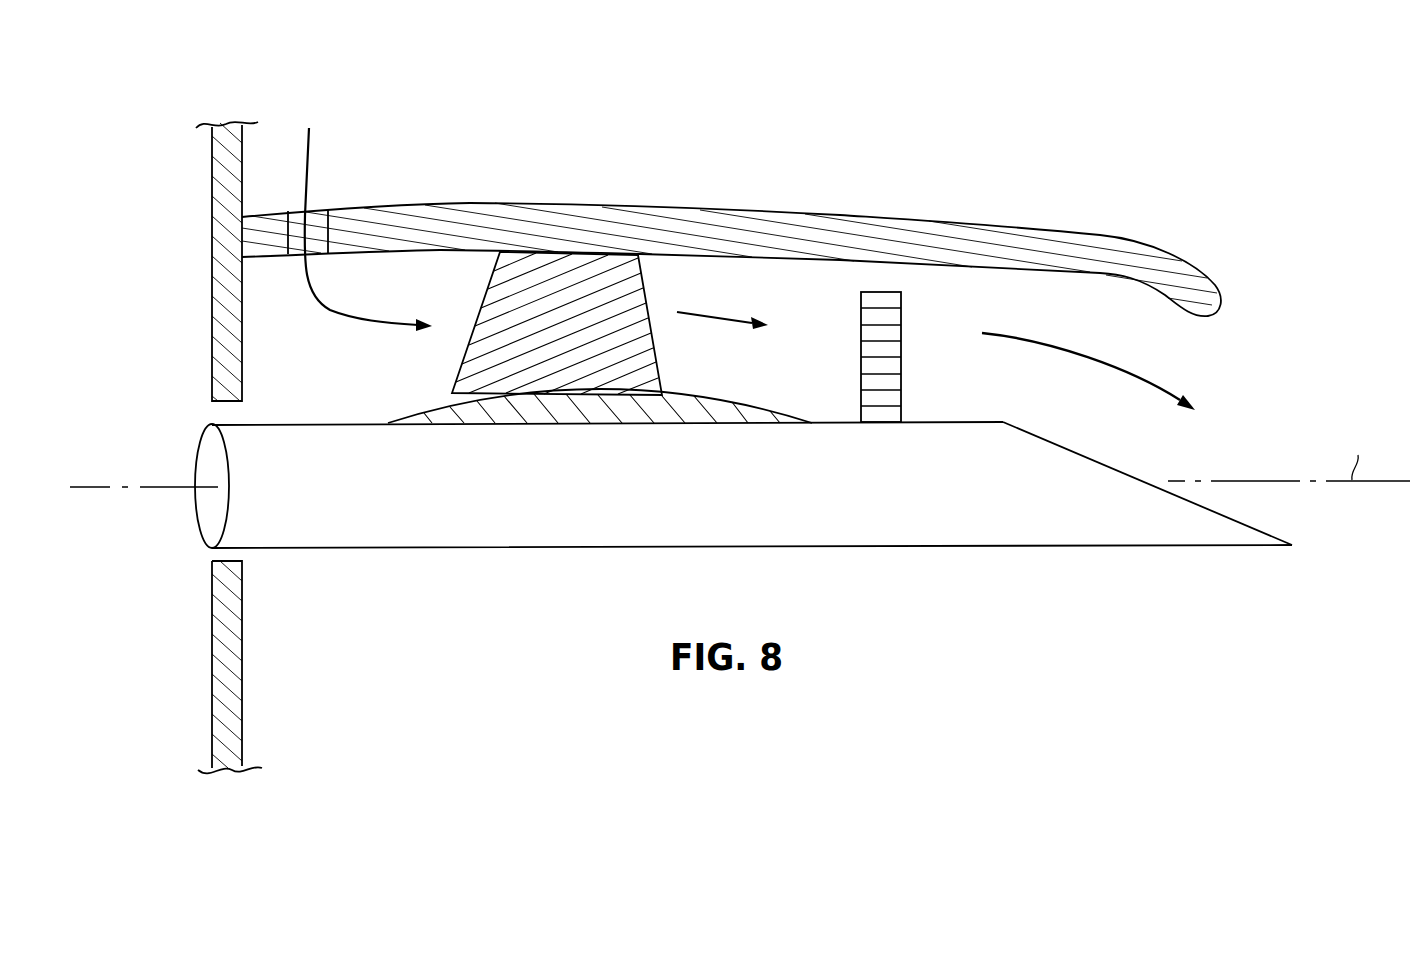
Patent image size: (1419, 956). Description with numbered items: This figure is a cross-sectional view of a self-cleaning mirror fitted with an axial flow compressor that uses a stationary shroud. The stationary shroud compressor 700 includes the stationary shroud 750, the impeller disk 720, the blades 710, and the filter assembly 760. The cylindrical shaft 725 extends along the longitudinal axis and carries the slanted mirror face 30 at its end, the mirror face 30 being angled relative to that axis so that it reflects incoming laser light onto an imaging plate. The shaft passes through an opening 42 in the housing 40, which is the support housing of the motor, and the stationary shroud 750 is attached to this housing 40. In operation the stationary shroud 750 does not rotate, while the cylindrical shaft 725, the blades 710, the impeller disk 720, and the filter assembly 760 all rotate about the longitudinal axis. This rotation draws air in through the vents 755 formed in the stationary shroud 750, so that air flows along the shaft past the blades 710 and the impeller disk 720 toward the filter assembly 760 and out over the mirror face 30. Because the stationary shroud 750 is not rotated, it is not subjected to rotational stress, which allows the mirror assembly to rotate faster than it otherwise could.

The stationary shroud compressor 700 is at (681, 108).
The mirror face 30 is at (1137, 478).
The housing 40 is at (218, 642).
The opening 42 is at (222, 413).
The blades 710 is at (565, 270).
The impeller disk 720 is at (445, 410).
The cylindrical shaft 725 is at (900, 522).
The stationary shroud 750 is at (834, 225).
The vents 755 is at (316, 210).
The filter assembly 760 is at (888, 300).